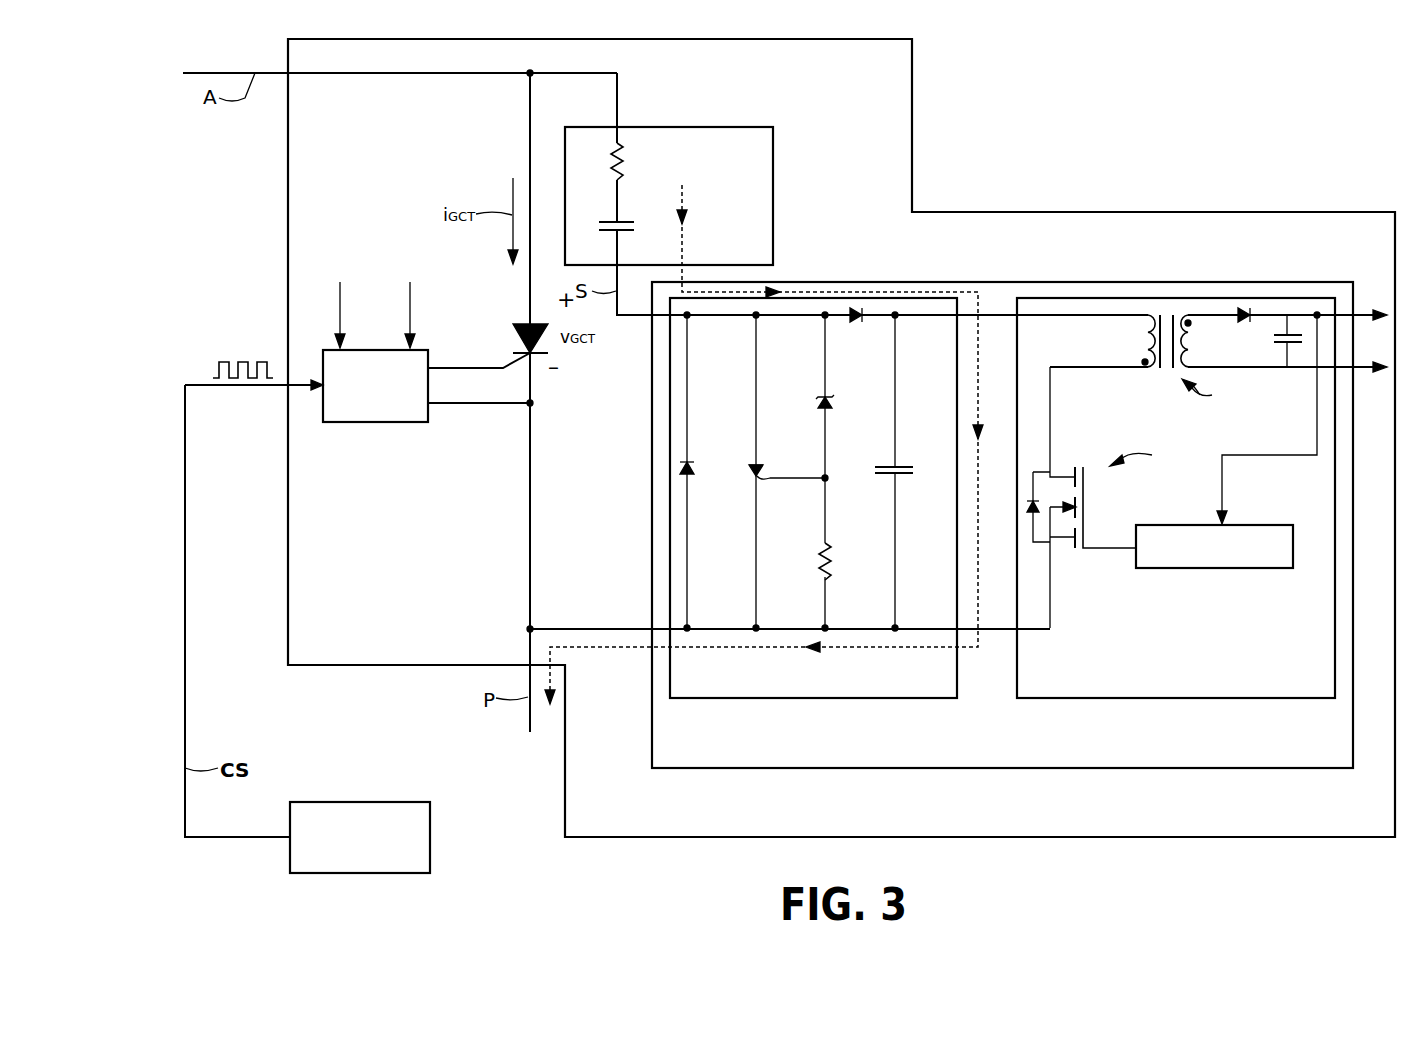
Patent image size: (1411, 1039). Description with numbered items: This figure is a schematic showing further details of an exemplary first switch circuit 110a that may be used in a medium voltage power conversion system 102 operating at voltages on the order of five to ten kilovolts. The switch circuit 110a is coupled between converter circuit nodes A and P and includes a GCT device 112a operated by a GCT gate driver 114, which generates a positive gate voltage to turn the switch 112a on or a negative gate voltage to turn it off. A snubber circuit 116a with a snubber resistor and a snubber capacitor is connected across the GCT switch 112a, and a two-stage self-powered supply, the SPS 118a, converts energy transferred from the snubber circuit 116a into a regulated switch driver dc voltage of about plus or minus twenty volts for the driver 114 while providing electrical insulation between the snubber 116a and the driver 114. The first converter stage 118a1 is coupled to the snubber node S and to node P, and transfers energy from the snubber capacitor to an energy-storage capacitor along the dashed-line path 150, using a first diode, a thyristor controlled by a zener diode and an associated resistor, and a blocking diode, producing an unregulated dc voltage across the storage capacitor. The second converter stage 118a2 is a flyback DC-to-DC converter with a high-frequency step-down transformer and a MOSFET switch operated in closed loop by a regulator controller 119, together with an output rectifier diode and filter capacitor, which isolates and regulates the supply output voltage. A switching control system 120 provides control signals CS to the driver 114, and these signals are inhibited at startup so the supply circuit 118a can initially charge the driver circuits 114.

The system 102 is at (1298, 83).
The first switch circuit 110a is at (1310, 837).
The GCT device 112a is at (508, 311).
The GCT gate driver 114 is at (410, 422).
The snubber circuit 116a is at (773, 197).
The SPS 118a is at (652, 750).
The first converter stage 118a1 is at (910, 698).
The second converter stage 118a2 is at (1204, 512).
The regulator controller 119 is at (1167, 568).
The switching control system 120 is at (430, 837).
The path 150 is at (978, 292).